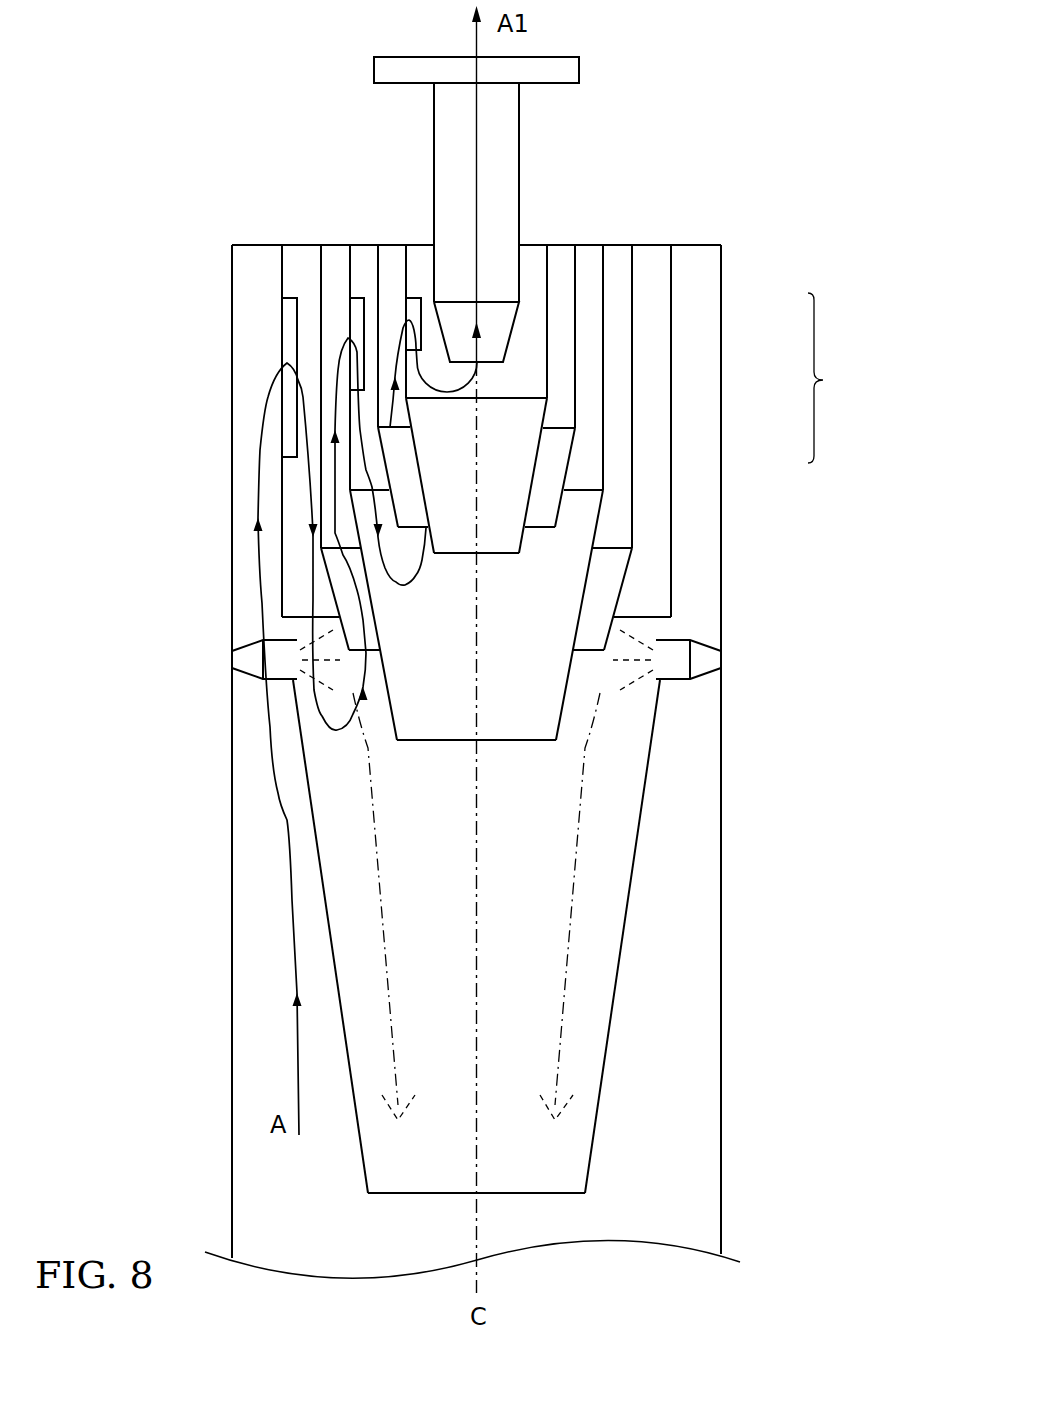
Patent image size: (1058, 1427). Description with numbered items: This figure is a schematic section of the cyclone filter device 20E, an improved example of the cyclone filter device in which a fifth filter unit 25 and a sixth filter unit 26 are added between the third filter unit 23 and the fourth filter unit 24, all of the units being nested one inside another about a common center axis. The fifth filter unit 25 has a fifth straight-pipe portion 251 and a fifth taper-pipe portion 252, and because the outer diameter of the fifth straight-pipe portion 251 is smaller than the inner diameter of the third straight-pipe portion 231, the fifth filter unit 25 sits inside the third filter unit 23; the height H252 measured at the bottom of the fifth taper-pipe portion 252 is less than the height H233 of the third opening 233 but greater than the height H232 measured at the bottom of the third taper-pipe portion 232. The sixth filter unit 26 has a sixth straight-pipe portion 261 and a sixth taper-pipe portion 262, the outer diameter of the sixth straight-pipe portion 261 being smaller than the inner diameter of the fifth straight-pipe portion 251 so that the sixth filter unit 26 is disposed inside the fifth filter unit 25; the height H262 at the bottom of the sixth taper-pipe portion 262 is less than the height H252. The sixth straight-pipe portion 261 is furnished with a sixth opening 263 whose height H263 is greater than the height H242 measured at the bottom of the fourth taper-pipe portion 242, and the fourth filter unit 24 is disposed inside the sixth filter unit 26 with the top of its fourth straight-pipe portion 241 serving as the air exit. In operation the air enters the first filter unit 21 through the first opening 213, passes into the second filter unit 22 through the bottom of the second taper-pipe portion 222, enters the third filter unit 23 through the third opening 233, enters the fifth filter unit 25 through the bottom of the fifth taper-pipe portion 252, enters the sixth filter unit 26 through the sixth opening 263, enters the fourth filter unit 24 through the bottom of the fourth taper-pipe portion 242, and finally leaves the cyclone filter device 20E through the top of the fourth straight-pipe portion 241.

The first filter unit 21 is at (282, 267).
The first opening 213 is at (290, 315).
The second filter unit 22 is at (320, 267).
The second taper-pipe portion 222 is at (340, 585).
The third filter unit 23 is at (433, 758).
The third straight-pipe portion 231 is at (590, 320).
The third taper-pipe portion 232 is at (515, 742).
The third opening 233 is at (355, 313).
The fourth filter unit 24 is at (536, 128).
The fourth straight-pipe portion 241 is at (508, 167).
The fourth taper-pipe portion 242 is at (490, 352).
The fifth filter unit 25 is at (835, 378).
The fifth straight-pipe portion 251 is at (578, 323).
The fifth taper-pipe portion 252 is at (570, 453).
The sixth filter unit 26 is at (497, 565).
The sixth straight-pipe portion 261 is at (418, 267).
The sixth taper-pipe portion 262 is at (455, 556).
The sixth opening 263 is at (410, 310).
The cyclone filter device 20E is at (643, 807).
The height of the sixth opening H263 is at (402, 352).
The height of the third opening H233 is at (343, 390).
The height of the bottom of the fourth taper-pipe portion H242 is at (508, 362).
The height of the bottom of the fifth taper-pipe portion H252 is at (565, 527).
The height of the bottom of the sixth taper-pipe portion H262 is at (530, 553).
The height of the bottom of the third taper-pipe portion H232 is at (562, 740).